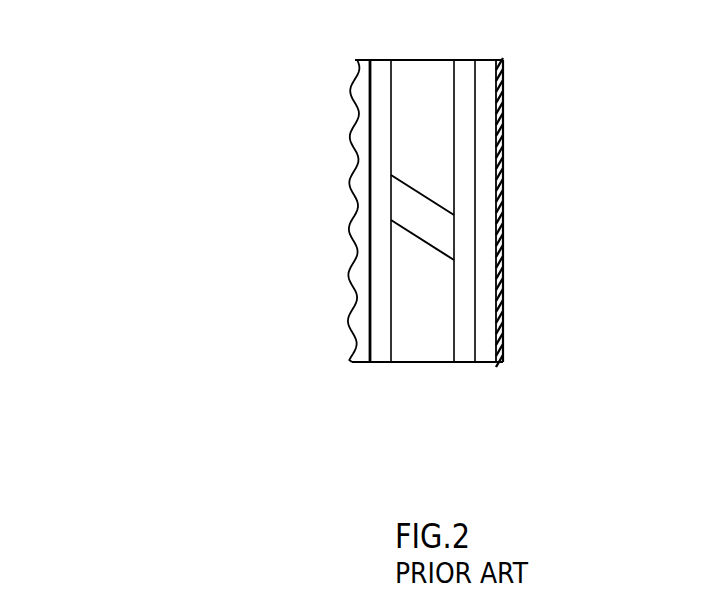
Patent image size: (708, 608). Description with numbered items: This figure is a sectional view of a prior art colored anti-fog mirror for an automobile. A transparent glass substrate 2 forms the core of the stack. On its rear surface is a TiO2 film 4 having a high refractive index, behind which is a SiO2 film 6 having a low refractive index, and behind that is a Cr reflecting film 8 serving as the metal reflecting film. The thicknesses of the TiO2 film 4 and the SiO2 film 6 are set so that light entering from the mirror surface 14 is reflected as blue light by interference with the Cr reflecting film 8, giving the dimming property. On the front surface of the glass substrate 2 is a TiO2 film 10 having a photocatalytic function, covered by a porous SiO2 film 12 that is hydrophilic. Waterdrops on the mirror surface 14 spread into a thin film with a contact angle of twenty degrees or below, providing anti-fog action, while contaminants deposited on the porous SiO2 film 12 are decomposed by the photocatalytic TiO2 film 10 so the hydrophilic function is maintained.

The transparent glass substrate 2 is at (413, 353).
The TiO2 film having a high refractive index 4 is at (463, 133).
The SiO2 film having a low refractive index 6 is at (483, 223).
The Cr reflecting film 8 is at (503, 308).
The TiO2 film having a photocatalytic function 10 is at (385, 329).
The porous SiO2 film 12 is at (360, 179).
The mirror surface 14 is at (358, 102).